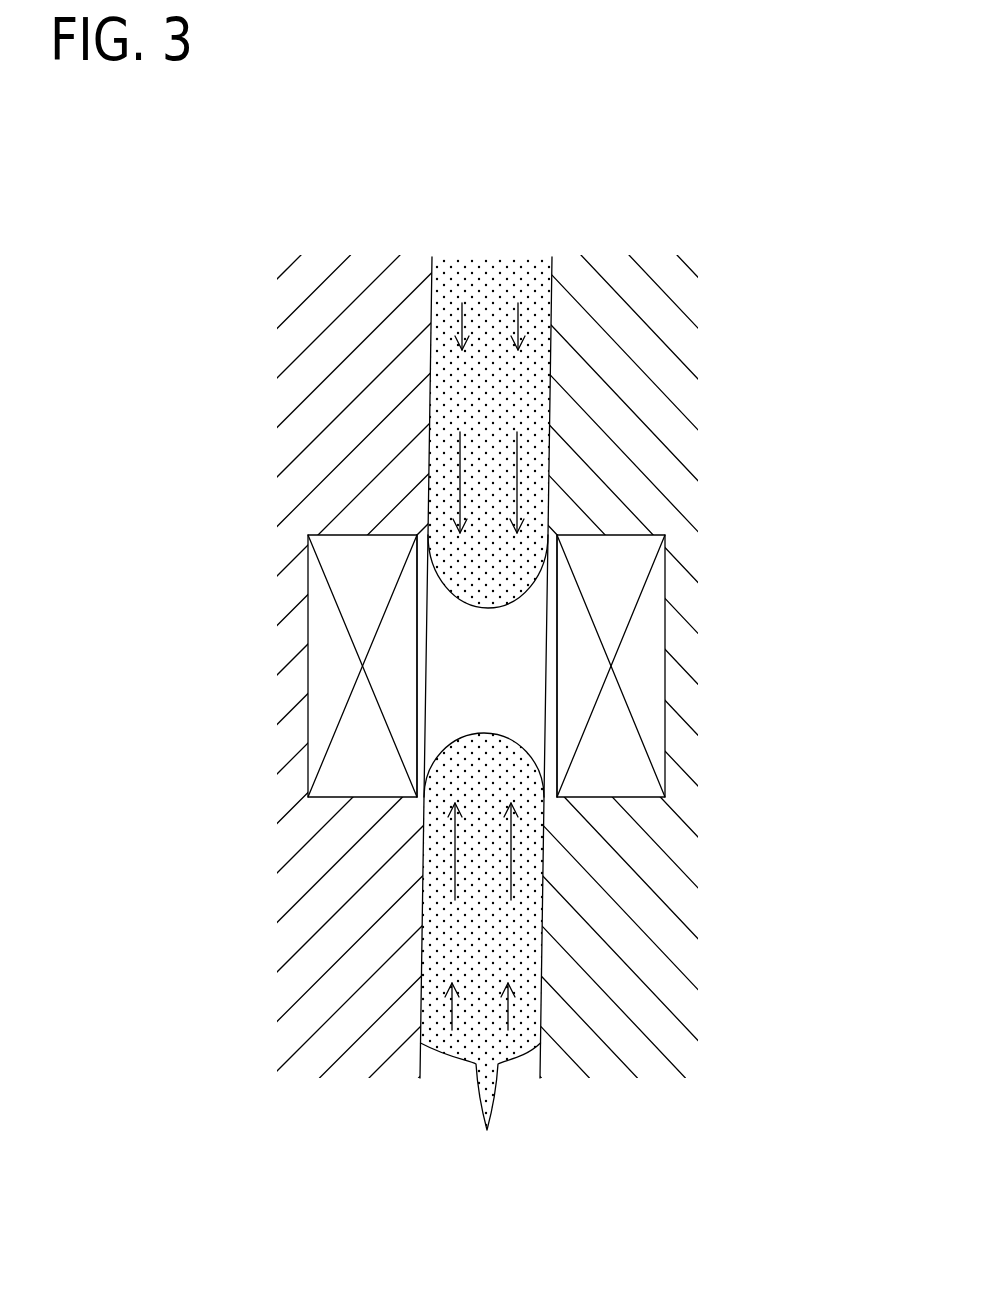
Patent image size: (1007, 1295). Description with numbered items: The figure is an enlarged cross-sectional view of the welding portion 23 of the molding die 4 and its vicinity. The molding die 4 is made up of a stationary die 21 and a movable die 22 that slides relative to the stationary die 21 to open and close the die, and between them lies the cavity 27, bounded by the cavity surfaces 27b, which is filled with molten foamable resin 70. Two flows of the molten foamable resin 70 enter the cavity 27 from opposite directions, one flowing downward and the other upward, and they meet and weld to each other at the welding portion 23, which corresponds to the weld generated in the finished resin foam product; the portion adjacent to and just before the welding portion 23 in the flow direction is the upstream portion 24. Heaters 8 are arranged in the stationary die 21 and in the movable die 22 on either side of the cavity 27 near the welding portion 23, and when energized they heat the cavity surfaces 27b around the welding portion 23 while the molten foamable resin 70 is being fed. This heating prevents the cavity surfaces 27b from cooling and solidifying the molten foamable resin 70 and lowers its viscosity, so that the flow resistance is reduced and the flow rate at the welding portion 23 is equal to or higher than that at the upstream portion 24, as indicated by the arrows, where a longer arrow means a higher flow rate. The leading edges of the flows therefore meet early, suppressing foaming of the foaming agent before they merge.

The molding die 4 is at (503, 738).
The stationary die 21 is at (600, 1095).
The movable die 22 is at (346, 1090).
The welding portion 23 is at (403, 810).
The upstream portion 24 is at (420, 313).
The cavity 27 is at (492, 257).
The cavity surface 27b is at (481, 1111).
The molten foamable resin 70 is at (482, 397).
The heater 8 is at (308, 690).